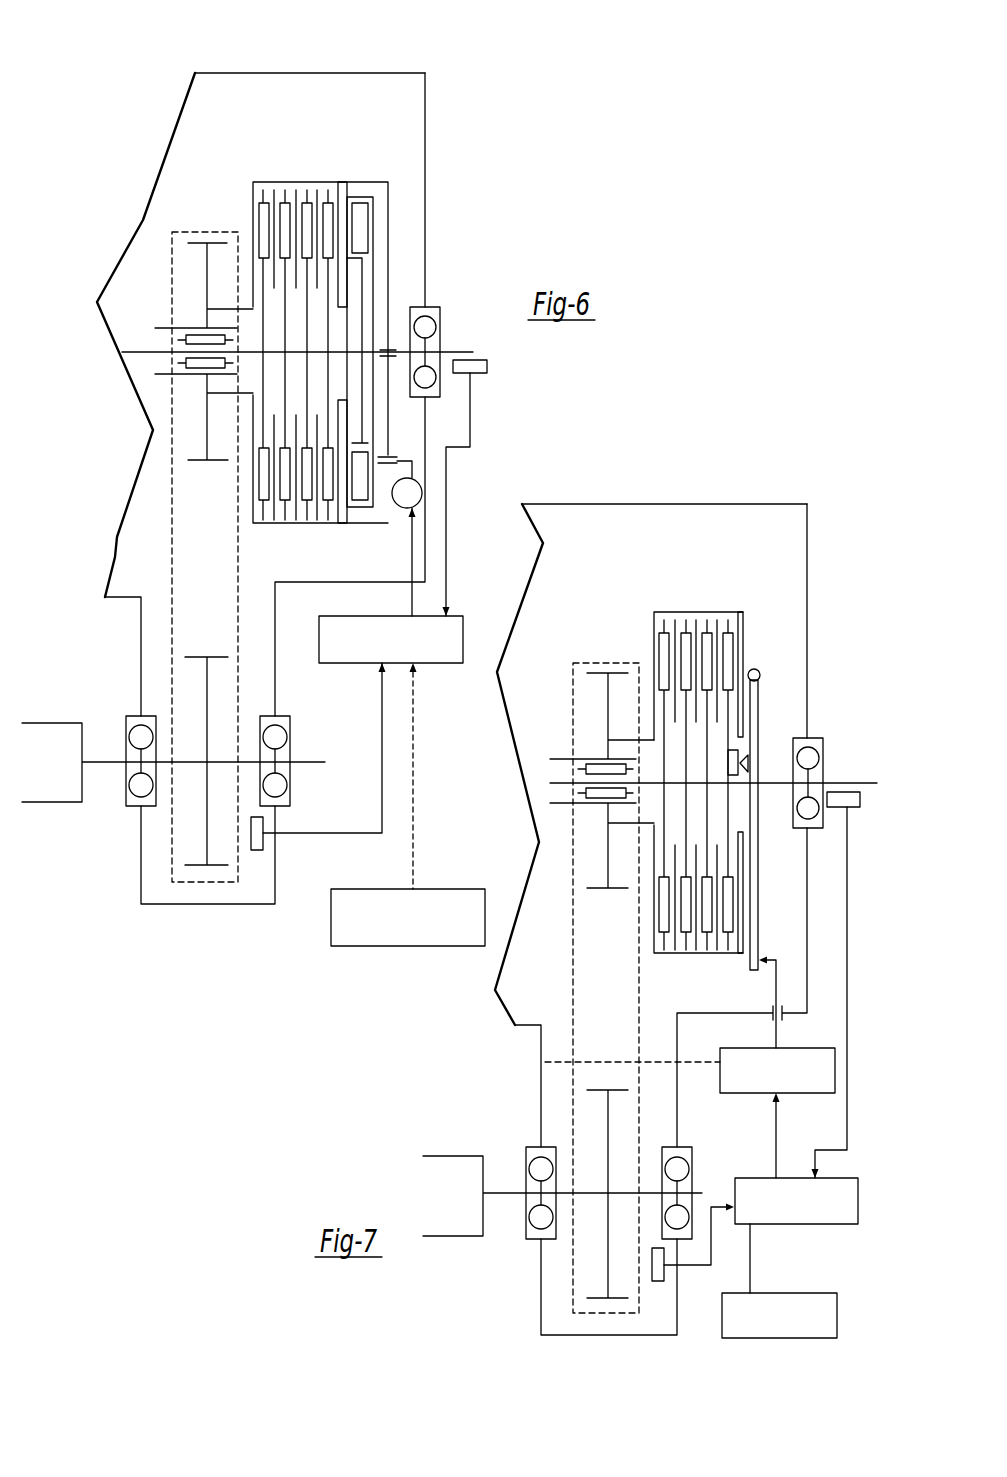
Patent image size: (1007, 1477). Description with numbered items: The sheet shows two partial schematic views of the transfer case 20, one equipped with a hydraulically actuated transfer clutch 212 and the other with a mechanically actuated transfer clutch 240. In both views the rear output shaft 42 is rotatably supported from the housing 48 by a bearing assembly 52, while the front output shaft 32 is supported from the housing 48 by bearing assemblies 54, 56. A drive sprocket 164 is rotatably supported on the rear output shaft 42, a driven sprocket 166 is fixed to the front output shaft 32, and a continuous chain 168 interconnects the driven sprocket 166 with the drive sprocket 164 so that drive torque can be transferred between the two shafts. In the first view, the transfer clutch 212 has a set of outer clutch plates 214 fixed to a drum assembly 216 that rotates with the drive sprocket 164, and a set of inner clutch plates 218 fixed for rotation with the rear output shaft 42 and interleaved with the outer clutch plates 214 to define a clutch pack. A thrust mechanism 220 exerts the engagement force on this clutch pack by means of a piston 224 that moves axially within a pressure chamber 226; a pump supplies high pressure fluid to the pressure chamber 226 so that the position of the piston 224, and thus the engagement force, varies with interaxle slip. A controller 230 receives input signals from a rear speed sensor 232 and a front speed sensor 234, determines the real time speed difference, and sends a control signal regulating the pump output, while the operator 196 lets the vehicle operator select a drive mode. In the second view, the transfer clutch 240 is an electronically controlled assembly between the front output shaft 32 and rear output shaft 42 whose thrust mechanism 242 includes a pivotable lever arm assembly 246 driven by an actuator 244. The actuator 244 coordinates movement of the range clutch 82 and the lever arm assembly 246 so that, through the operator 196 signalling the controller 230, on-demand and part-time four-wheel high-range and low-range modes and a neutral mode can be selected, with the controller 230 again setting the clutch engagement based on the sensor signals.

In FIG. 6, the transfer case 20 is at (284, 58).
In FIG. 7, the transfer case 20 is at (688, 478).
In FIG. 6, the housing 48 is at (403, 72).
In FIG. 7, the housing 48 is at (795, 504).
In FIG. 6, the front output shaft 32 is at (108, 762).
In FIG. 7, the front output shaft 32 is at (513, 1197).
In FIG. 6, the rear output shaft 42 is at (408, 305).
In FIG. 7, the rear output shaft 42 is at (768, 783).
In FIG. 6, the bearing assembly 52 is at (427, 380).
In FIG. 6, the bearing assembly 54 is at (137, 790).
In FIG. 6, the bearing assembly 56 is at (278, 737).
In FIG. 7, the range clutch 82 is at (641, 1033).
In FIG. 6, the drive sprocket 164 is at (207, 270).
In FIG. 7, the drive sprocket 164 is at (608, 712).
In FIG. 6, the driven sprocket 166 is at (205, 690).
In FIG. 7, the driven sprocket 166 is at (607, 1092).
In FIG. 6, the continuous chain 168 is at (172, 535).
In FIG. 7, the continuous chain 168 is at (573, 907).
In FIG. 6, the operator 196 is at (331, 917).
In FIG. 7, the operator 196 is at (833, 1320).
In FIG. 6, the transfer clutch 212 is at (307, 181).
In FIG. 6, the outer clutch plates 214 is at (277, 192).
In FIG. 7, the outer clutch plates 214 is at (720, 623).
In FIG. 6, the drum assembly 216 is at (253, 197).
In FIG. 7, the drum assembly 216 is at (682, 609).
In FIG. 6, the inner clutch plates 218 is at (328, 340).
In FIG. 7, the inner clutch plates 218 is at (728, 870).
In FIG. 6, the thrust mechanism 220 is at (375, 215).
In FIG. 6, the piston 224 is at (370, 260).
In FIG. 6, the pressure chamber 226 is at (377, 193).
In FIG. 6, the controller 230 is at (453, 655).
In FIG. 7, the controller 230 is at (812, 1224).
In FIG. 6, the rear speed sensor 232 is at (483, 360).
In FIG. 7, the rear speed sensor 232 is at (858, 805).
In FIG. 6, the front speed sensor 234 is at (263, 842).
In FIG. 7, the front speed sensor 234 is at (658, 1279).
In FIG. 7, the transfer clutch 240 is at (708, 592).
In FIG. 7, the thrust mechanism 242 is at (762, 727).
In FIG. 7, the actuator 244 is at (807, 1093).
In FIG. 7, the lever arm assembly 246 is at (783, 932).